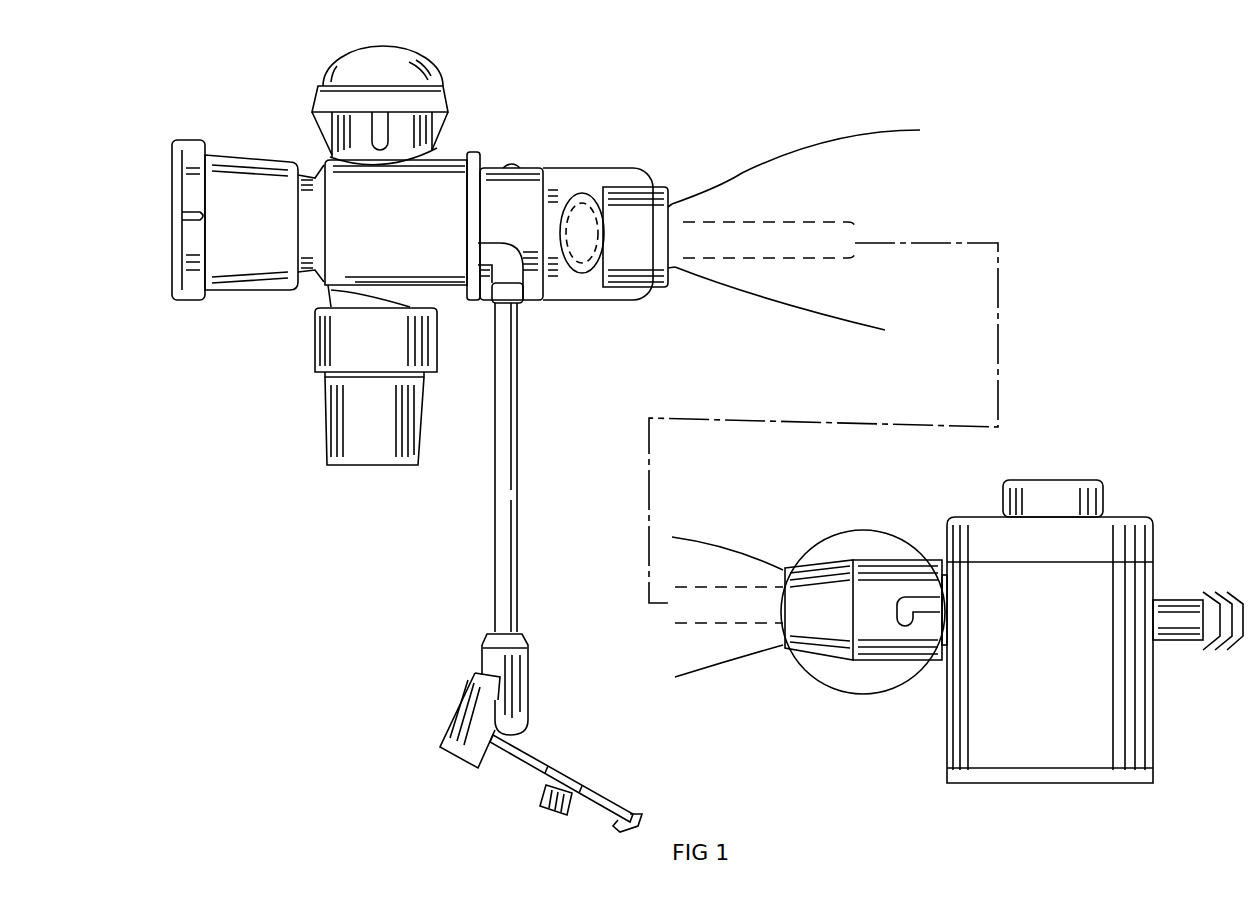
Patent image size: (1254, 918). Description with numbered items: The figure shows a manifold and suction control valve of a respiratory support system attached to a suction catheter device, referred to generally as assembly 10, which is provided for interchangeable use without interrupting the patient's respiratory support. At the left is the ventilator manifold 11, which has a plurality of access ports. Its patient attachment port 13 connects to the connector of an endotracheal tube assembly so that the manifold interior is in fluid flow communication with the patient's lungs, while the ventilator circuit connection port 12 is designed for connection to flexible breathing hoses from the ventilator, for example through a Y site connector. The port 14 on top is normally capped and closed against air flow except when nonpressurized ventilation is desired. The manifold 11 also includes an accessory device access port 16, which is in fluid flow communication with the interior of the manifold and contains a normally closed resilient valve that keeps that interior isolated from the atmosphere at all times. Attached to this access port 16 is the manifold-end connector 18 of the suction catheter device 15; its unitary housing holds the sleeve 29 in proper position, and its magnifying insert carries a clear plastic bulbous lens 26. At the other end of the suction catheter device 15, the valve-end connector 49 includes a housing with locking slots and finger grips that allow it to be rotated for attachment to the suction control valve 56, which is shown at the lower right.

The manifold and suction control valve of a respiratory support system attached to a 10 is at (1033, 342).
The ventilator manifold 11 is at (463, 128).
The ventilator circuit connection port 12 is at (309, 419).
The patient attachment port 13 is at (239, 135).
The port 14 is at (300, 102).
The suction catheter device 15 is at (841, 126).
The accessory device access port 16 is at (492, 154).
The manifold-end connector 18 is at (630, 146).
The bulbous lens 26 is at (573, 197).
The sleeve 29 is at (742, 173).
The valve-end connector 49 is at (831, 707).
The suction control valve 56 is at (1137, 506).